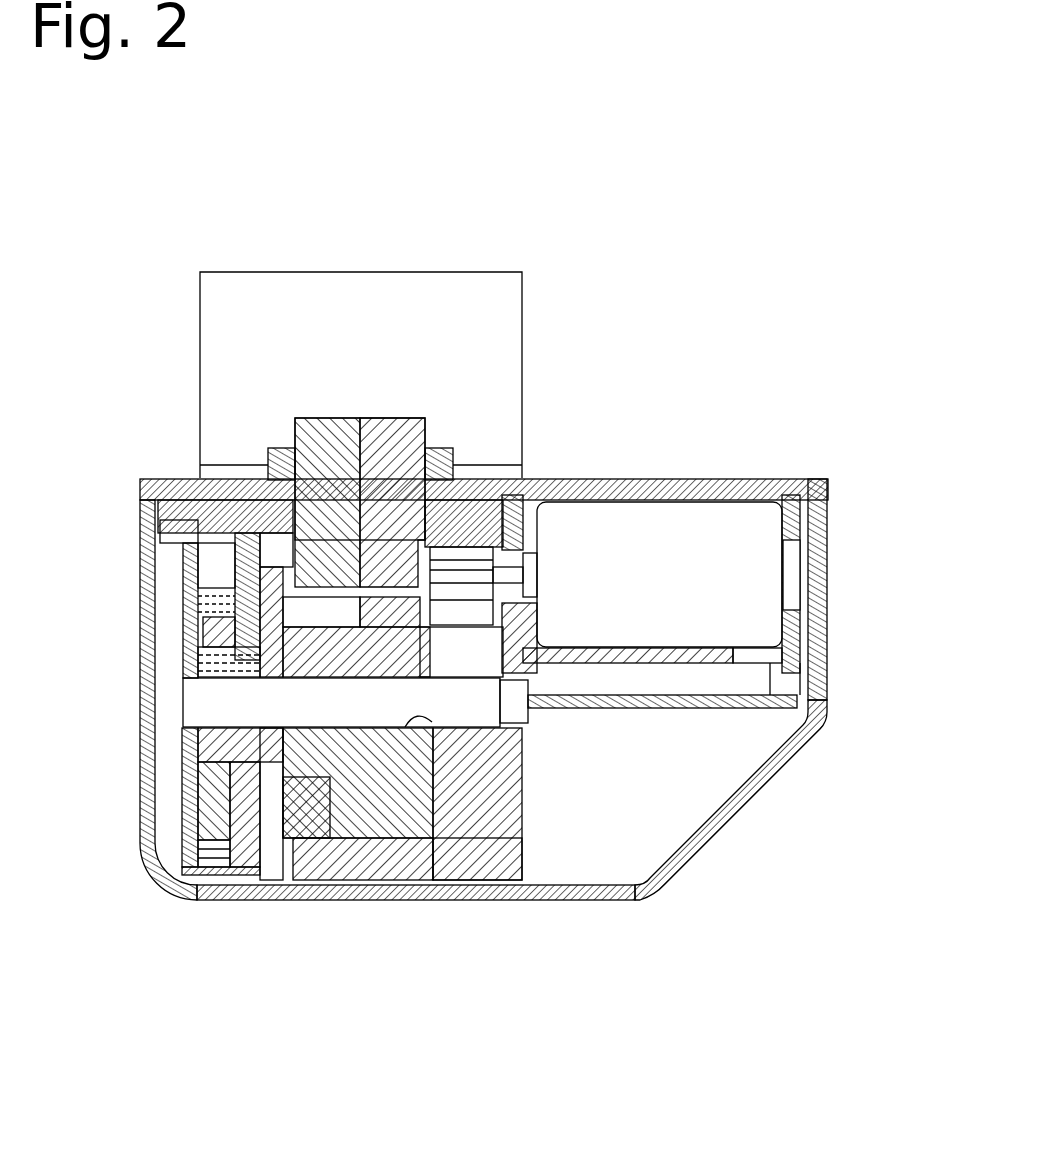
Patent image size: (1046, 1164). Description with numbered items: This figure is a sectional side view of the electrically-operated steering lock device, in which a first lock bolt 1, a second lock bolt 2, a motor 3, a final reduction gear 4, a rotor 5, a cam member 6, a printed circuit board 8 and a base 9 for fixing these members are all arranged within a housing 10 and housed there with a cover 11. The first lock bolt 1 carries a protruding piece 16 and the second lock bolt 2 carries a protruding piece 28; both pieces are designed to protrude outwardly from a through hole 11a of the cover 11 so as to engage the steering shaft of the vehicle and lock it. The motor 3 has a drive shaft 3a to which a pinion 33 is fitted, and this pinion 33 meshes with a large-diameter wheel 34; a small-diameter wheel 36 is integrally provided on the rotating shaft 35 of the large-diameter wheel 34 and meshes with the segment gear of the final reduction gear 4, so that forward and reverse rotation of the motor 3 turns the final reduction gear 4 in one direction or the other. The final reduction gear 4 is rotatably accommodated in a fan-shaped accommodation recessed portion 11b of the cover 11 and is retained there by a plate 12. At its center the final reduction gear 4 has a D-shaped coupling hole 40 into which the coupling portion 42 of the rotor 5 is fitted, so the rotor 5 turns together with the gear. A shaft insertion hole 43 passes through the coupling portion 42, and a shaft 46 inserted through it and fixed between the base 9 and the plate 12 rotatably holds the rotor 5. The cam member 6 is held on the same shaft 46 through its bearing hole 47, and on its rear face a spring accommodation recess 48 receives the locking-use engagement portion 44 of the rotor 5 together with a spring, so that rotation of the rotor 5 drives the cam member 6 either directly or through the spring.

The first lock bolt 1 is at (425, 440).
The second lock bolt 2 is at (302, 610).
The motor 3 is at (733, 535).
The drive shaft 3a is at (508, 575).
The final reduction gear 4 is at (210, 790).
The rotor 5 is at (267, 840).
The cam member 6 is at (403, 850).
The printed circuit board 8 is at (690, 703).
The base 9 is at (510, 845).
The housing 10 is at (710, 832).
The cover 11 is at (657, 478).
The through hole 11a is at (268, 452).
The accommodation recessed portion 11b is at (203, 895).
The plate 12 is at (183, 760).
The protruding piece 16 is at (400, 435).
The protruding piece 28 is at (330, 428).
The pinion 33 is at (470, 600).
The large-diameter wheel 34 is at (540, 640).
The rotating shaft 35 is at (183, 525).
The small-diameter wheel 36 is at (183, 632).
The coupling hole 40 is at (198, 740).
The coupling portion 42 is at (228, 695).
The shaft insertion hole 43 is at (205, 665).
The locking-use engagement portion 44 is at (300, 850).
The shaft 46 is at (500, 728).
The bearing hole 47 is at (463, 735).
The spring accommodation recess 48 is at (345, 840).